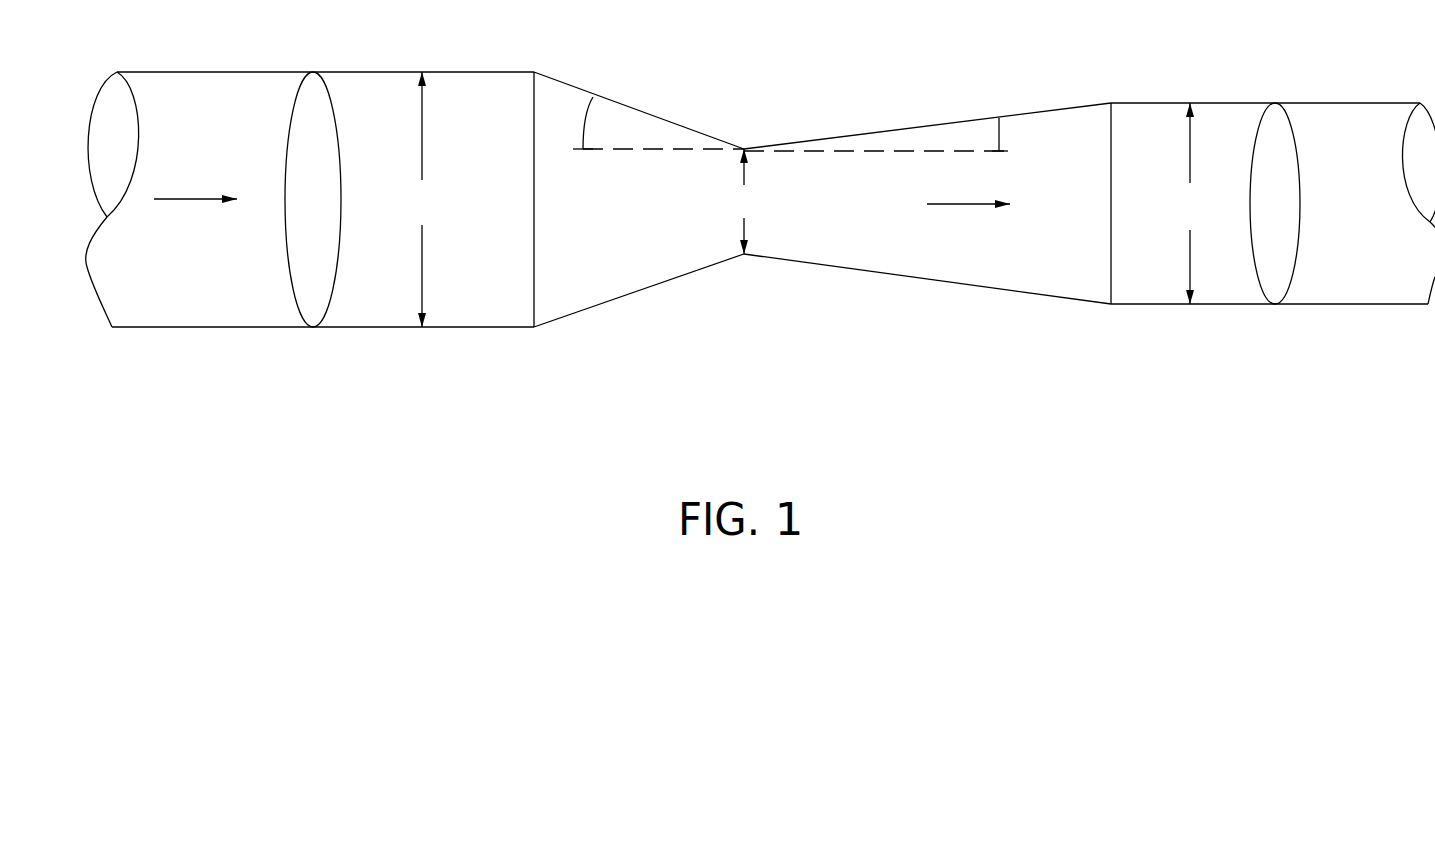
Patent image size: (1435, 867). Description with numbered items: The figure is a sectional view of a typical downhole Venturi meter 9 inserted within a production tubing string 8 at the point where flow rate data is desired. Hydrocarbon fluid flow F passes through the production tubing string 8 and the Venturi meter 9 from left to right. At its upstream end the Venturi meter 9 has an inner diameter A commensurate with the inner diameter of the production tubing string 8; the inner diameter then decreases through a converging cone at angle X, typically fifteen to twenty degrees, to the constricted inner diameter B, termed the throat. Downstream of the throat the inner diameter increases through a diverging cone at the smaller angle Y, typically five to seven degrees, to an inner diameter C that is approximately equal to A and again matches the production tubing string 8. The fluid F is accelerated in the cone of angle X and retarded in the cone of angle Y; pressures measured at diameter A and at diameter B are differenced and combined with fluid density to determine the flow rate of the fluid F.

The production tubing string 8 is at (204, 66).
The Venturi meter 9 is at (766, 117).
The inner diameter A is at (420, 199).
The inner diameter B is at (742, 201).
The inner diameter C is at (1189, 203).
The angle X is at (574, 123).
The angle Y is at (1009, 134).
The hydrocarbon fluid flow F is at (582, 189).